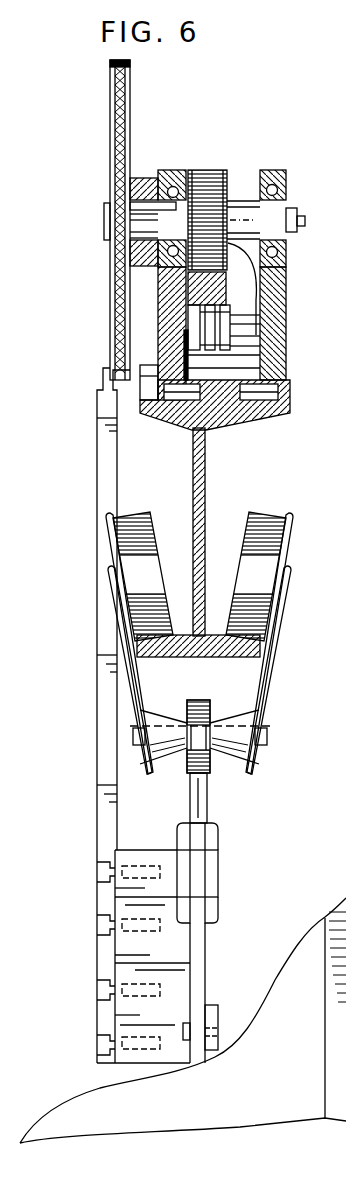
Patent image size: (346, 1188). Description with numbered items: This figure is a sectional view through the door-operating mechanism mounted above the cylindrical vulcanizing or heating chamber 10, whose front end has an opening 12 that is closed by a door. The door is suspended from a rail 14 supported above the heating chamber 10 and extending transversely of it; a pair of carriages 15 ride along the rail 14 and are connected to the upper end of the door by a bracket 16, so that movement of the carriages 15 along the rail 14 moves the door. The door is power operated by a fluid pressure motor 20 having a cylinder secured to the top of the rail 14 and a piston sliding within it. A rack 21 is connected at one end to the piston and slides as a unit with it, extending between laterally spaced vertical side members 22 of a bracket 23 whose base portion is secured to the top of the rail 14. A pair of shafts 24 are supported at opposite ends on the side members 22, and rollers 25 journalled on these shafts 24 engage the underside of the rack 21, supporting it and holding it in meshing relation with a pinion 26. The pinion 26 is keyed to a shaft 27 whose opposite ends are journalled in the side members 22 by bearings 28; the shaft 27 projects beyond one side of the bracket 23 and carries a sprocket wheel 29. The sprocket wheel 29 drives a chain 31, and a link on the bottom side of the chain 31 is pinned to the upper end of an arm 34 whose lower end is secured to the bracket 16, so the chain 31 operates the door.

The heating chamber 10 is at (267, 988).
The opening 12 is at (168, 120).
The rail 14 is at (203, 485).
The carriages 15 is at (262, 704).
The bracket 16 is at (130, 940).
The fluid pressure motor 20 is at (250, 277).
The rack 21 is at (226, 304).
The side members 22 is at (270, 318).
The bracket 23 is at (228, 398).
The shafts 24 is at (272, 345).
The rollers 25 is at (182, 348).
The pinion 26 is at (215, 186).
The shaft 27 is at (242, 215).
The bearings 28 is at (170, 190).
The sprocket wheel 29 is at (134, 185).
The chain 31 is at (121, 66).
The arm 34 is at (108, 466).